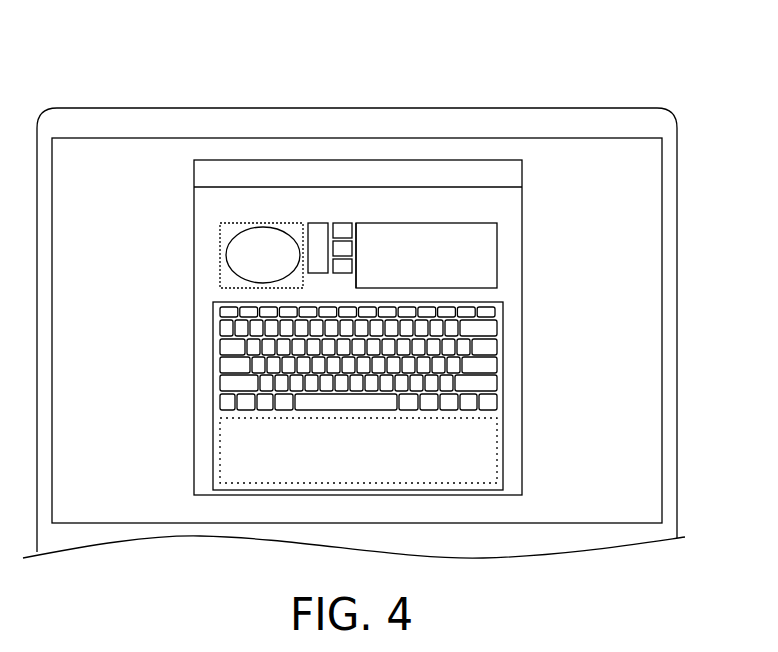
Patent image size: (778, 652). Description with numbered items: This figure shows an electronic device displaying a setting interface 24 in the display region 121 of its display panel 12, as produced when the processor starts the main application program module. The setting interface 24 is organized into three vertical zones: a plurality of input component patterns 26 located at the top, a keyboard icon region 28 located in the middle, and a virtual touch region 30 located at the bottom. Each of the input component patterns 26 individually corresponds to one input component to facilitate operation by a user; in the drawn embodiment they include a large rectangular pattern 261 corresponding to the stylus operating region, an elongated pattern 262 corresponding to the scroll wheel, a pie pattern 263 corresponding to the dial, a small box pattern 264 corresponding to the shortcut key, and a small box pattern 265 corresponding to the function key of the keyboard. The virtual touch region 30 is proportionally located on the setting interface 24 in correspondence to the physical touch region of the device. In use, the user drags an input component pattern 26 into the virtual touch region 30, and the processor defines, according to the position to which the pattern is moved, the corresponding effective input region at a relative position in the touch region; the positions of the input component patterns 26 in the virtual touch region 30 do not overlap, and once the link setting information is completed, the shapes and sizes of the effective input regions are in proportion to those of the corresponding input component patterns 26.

The display panel 12 is at (665, 171).
The display region 121 is at (640, 372).
The setting interface 24 is at (488, 160).
The input component patterns 26 is at (468, 62).
The large rectangular pattern 261 is at (445, 240).
The elongated pattern 262 is at (319, 223).
The pie pattern 263 is at (237, 255).
The small box pattern 264 is at (341, 235).
The small box pattern 265 is at (360, 239).
The keyboard icon region 28 is at (480, 330).
The virtual touch region 30 is at (475, 446).